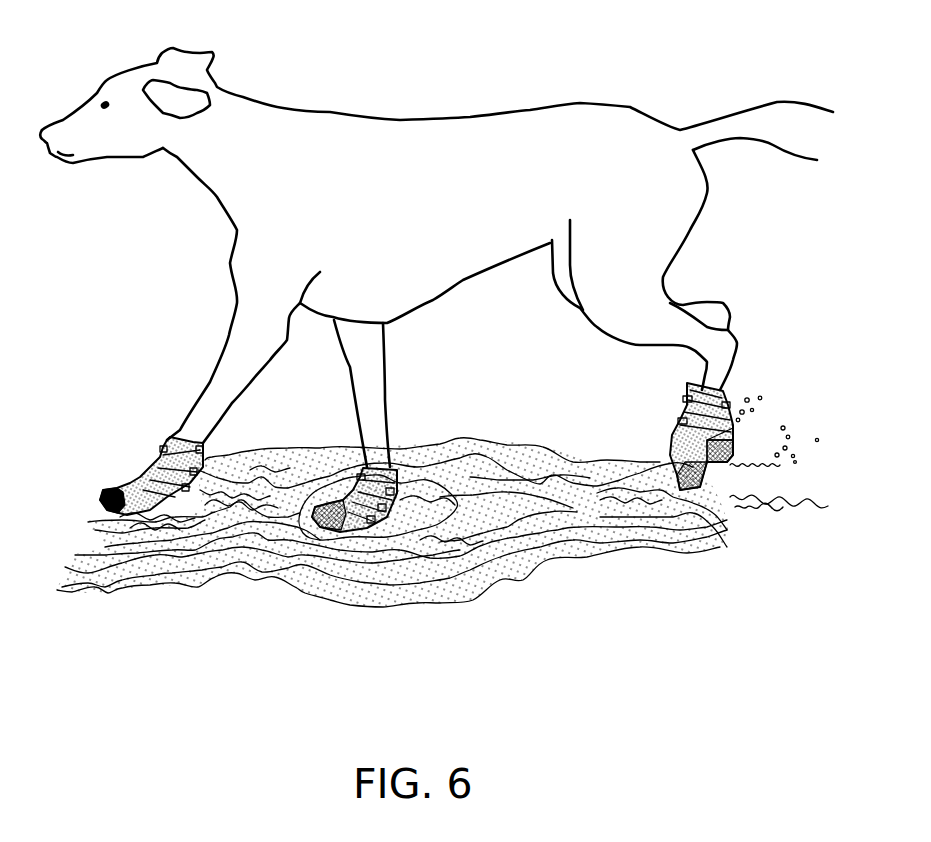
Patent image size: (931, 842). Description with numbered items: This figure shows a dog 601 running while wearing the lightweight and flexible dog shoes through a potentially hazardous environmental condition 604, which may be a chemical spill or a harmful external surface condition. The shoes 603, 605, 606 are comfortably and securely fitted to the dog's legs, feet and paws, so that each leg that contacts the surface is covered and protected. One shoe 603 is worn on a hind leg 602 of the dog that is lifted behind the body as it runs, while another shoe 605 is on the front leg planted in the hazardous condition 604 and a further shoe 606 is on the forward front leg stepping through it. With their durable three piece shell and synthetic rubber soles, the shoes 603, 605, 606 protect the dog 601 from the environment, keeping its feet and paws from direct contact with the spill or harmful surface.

The dog 601 is at (327, 148).
The hind leg of dog 602 is at (630, 293).
The shoe 603 is at (677, 423).
The potentially hazardous environmental condition 604 is at (565, 520).
The shoe 605 is at (383, 483).
The shoe 606 is at (153, 467).